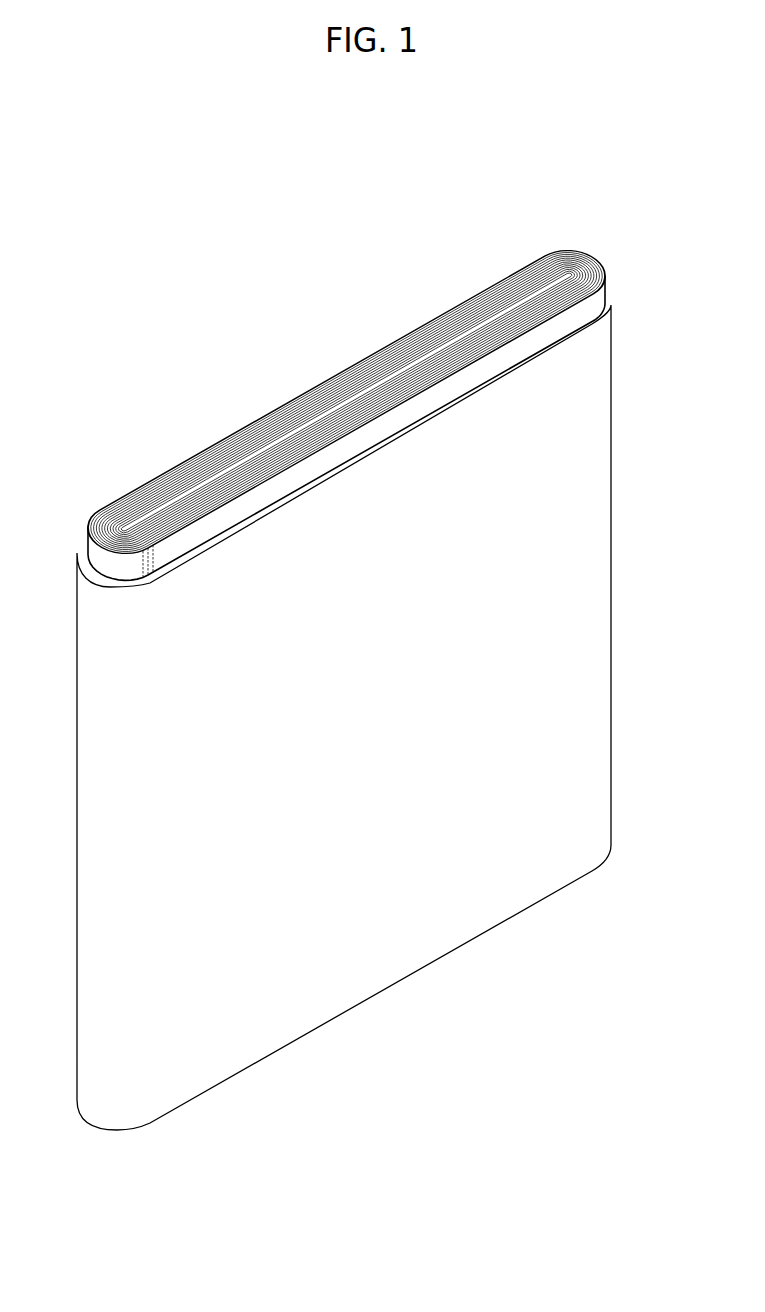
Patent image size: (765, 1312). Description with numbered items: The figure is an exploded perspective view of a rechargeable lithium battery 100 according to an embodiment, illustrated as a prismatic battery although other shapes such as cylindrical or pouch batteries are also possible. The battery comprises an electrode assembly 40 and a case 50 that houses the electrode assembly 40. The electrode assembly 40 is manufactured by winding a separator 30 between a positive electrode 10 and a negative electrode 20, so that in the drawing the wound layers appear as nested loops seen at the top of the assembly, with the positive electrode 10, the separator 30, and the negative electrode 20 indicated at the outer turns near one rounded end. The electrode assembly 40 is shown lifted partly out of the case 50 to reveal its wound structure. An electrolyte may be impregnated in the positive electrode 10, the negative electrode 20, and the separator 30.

The rechargeable lithium battery 100 is at (326, 162).
The positive electrode 10 is at (604, 270).
The negative electrode 20 is at (565, 268).
The separator 30 is at (589, 263).
The electrode assembly 40 is at (322, 357).
The case 50 is at (596, 563).